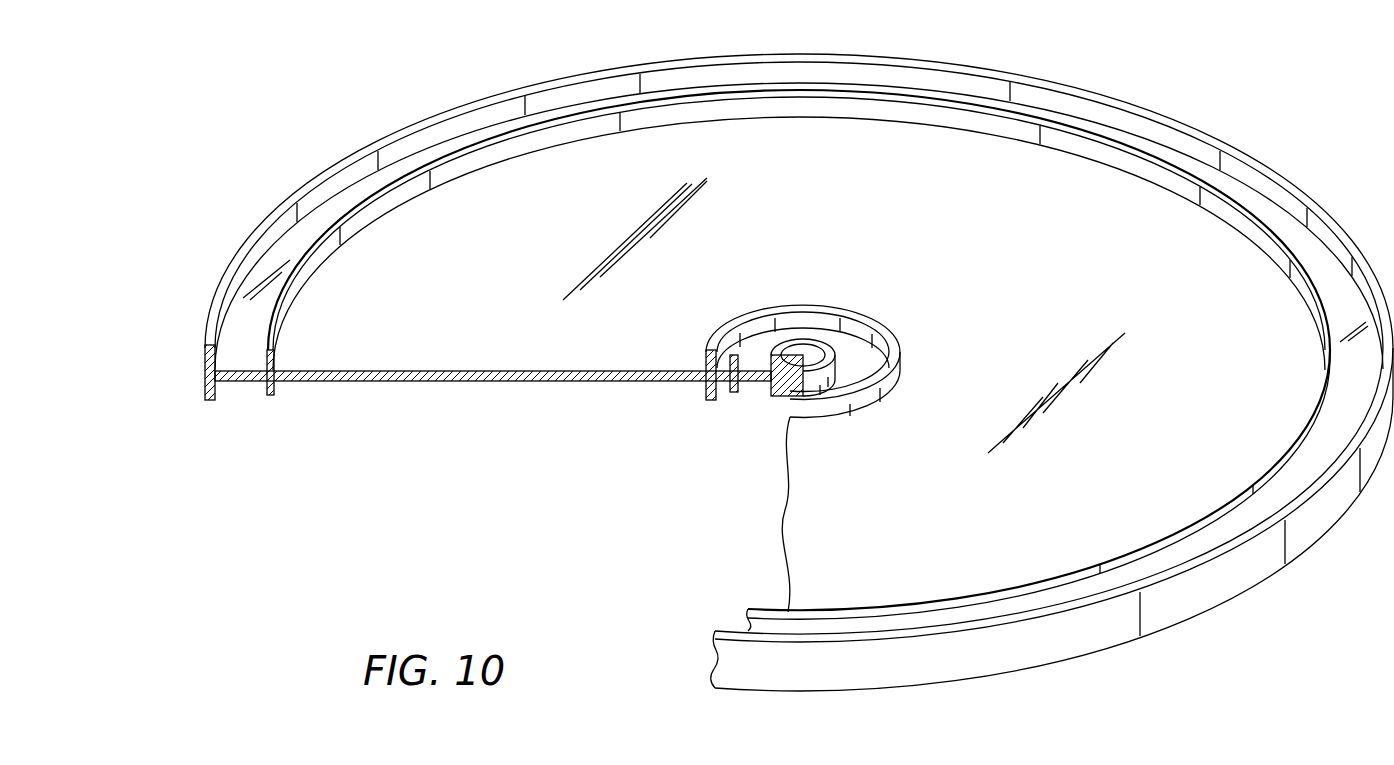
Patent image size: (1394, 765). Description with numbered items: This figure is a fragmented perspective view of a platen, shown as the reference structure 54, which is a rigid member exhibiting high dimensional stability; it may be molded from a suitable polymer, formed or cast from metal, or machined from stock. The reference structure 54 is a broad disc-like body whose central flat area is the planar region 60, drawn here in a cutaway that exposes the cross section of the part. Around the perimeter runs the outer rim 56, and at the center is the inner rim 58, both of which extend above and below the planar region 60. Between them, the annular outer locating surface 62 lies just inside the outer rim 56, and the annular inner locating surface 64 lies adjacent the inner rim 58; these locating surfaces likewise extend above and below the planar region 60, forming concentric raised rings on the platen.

The reference structure 54 is at (1252, 149).
The outer rim 56 is at (306, 186).
The inner rim 58 is at (774, 386).
The planar region 60 is at (967, 213).
The annular outer locating surface 62 is at (437, 163).
The annular inner locating surface 64 is at (705, 357).